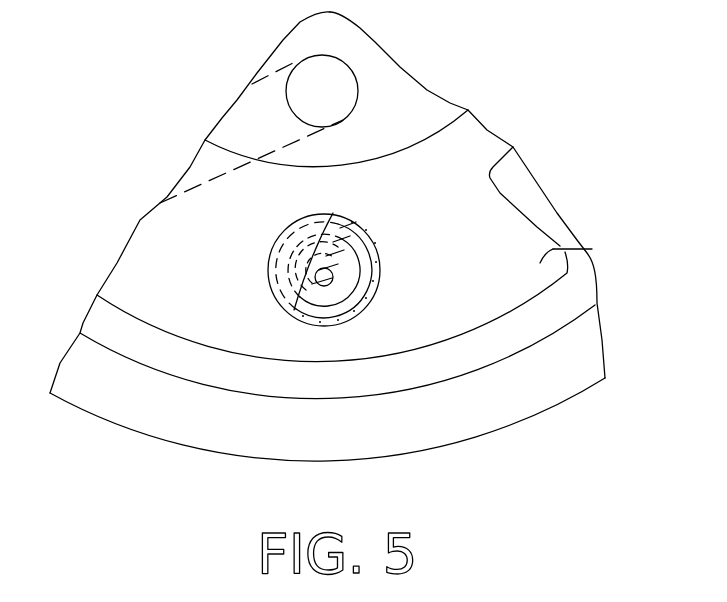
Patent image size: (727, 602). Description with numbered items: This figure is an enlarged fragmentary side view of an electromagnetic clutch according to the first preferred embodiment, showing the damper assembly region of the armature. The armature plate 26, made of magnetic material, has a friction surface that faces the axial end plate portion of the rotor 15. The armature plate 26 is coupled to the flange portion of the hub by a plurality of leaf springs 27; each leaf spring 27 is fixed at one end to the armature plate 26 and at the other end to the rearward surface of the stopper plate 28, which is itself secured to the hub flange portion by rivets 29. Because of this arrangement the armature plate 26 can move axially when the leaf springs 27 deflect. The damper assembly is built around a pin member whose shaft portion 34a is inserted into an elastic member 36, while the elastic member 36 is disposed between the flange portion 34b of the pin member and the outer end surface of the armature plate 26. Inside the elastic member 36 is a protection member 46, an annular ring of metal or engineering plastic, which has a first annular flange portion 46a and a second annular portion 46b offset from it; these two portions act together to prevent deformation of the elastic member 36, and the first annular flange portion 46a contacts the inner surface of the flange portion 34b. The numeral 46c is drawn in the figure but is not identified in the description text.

The rotor 15 is at (458, 430).
The armature plate 26 is at (512, 338).
The leaf spring 27 is at (237, 138).
The stopper plate 28 is at (590, 249).
The rivet 29 is at (333, 83).
The shaft portion 34a is at (333, 280).
The flange portion 34b is at (313, 214).
The elastic member 36 is at (368, 232).
The protection member 46 is at (372, 258).
The first annular flange portion 46a is at (378, 283).
The second annular portion 46b is at (350, 290).
The bore 46c is at (333, 280).